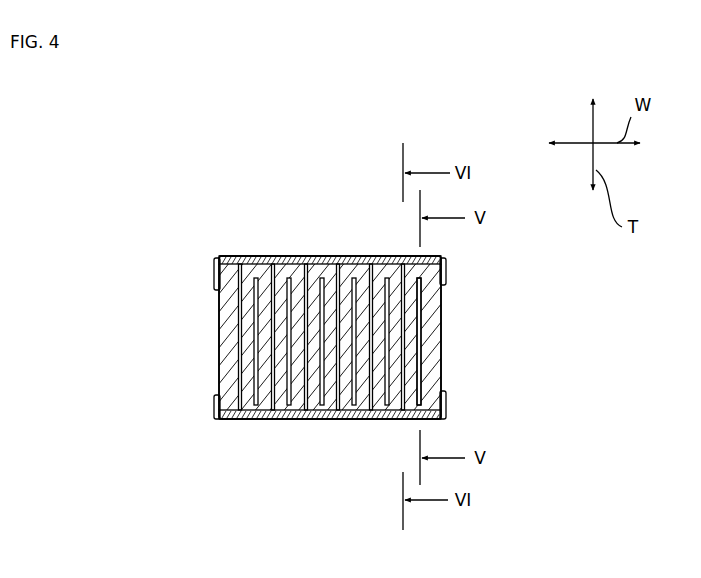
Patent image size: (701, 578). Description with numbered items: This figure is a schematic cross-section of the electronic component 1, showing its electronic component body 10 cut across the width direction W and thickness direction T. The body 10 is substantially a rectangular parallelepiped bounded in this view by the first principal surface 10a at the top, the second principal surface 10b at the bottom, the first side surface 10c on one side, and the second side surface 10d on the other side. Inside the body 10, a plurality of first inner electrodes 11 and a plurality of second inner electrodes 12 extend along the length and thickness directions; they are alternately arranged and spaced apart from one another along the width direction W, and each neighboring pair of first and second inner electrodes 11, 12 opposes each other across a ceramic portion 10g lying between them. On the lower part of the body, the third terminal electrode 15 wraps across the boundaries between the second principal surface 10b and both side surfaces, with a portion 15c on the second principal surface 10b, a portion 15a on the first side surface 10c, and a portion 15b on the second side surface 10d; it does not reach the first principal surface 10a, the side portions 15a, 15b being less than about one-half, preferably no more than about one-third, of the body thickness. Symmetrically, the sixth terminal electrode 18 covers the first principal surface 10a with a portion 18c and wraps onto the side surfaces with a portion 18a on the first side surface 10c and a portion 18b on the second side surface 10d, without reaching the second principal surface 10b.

The electronic component 1 is at (344, 223).
The electronic component body 10 is at (311, 246).
The first principal surface 10a is at (278, 248).
The second principal surface 10b is at (300, 412).
The first side surface 10c is at (433, 332).
The second side surface 10d is at (213, 381).
The ceramic portion 10g is at (404, 379).
The first inner electrode 11 is at (232, 299).
The second inner electrode 12 is at (230, 342).
The third terminal electrode 15 is at (249, 414).
The portion of third terminal electrode on first side surface 15a is at (437, 394).
The portion of third terminal electrode on second side surface 15b is at (209, 395).
The portion of third terminal electrode on second principal surface 15c is at (351, 412).
The sixth terminal electrode 18 is at (246, 246).
The portion of sixth terminal electrode on first side surface 18a is at (438, 265).
The portion of sixth terminal electrode on second side surface 18b is at (206, 251).
The portion of sixth terminal electrode on first principal surface 18c is at (370, 247).